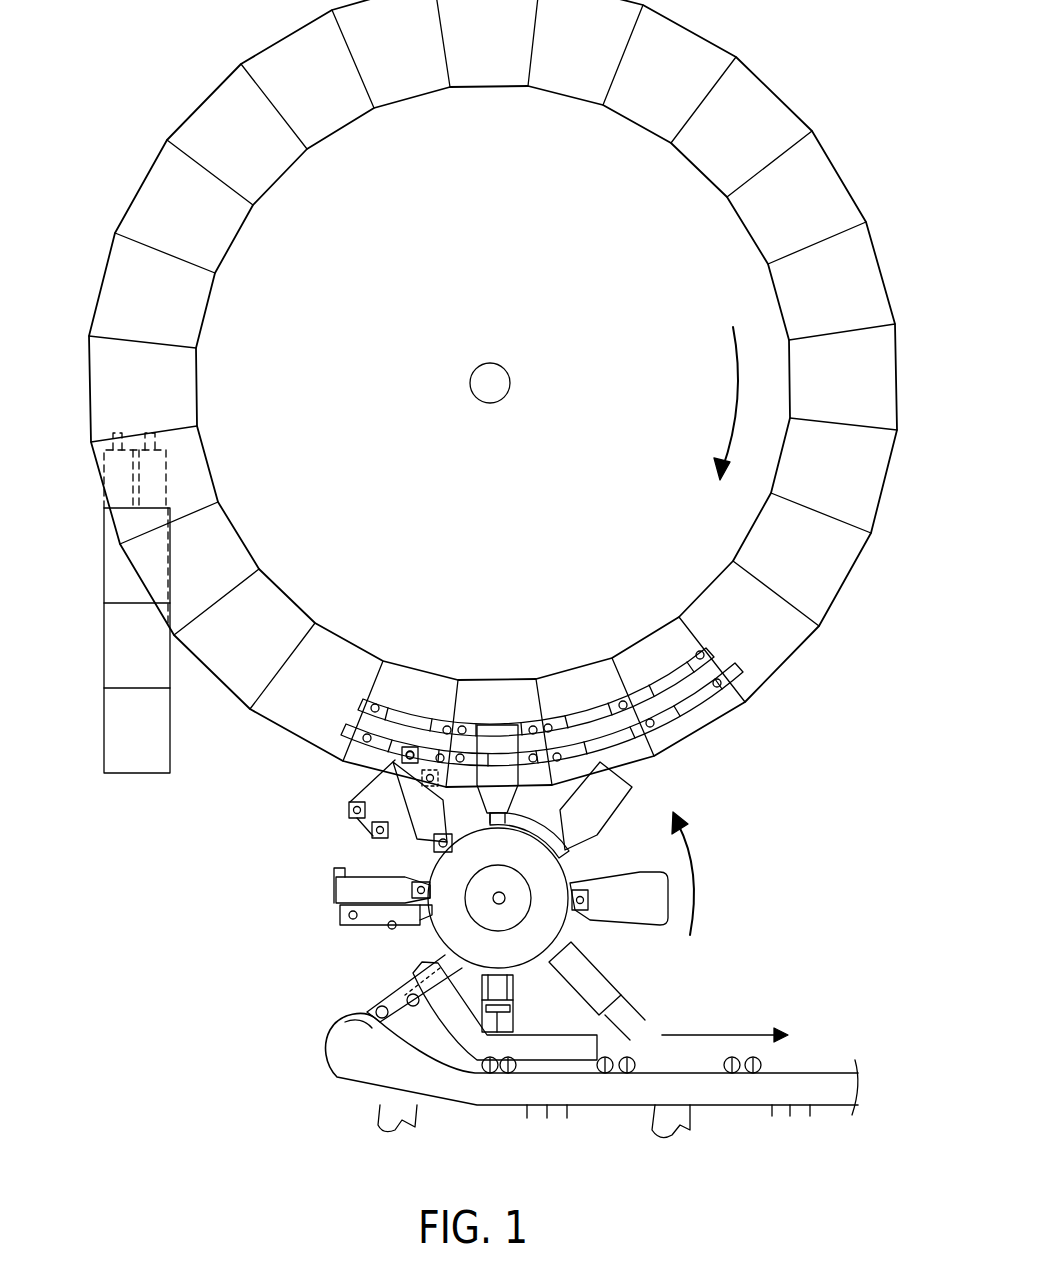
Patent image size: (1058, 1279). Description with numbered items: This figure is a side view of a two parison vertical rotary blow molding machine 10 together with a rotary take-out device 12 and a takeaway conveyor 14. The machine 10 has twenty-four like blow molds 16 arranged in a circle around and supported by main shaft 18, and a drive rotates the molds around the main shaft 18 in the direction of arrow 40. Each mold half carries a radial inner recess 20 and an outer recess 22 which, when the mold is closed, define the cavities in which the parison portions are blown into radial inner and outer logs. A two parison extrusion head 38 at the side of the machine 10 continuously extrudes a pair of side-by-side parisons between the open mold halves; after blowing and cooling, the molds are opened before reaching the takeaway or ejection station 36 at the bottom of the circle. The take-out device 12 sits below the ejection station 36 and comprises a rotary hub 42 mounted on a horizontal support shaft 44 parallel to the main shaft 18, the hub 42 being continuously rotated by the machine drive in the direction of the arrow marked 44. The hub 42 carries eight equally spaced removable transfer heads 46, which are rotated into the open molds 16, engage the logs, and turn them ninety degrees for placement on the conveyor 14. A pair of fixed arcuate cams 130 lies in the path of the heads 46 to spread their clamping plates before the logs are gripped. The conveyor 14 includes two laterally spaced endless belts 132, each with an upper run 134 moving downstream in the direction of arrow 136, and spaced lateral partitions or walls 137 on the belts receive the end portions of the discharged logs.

The blow molding machine 10 is at (106, 148).
The rotary take-out device 12 is at (258, 899).
The takeaway conveyor 14 is at (274, 1061).
The blow molds 16 is at (250, 200).
The main shaft 18 is at (498, 365).
The radial inner recess 20 is at (392, 697).
The outer recess 22 is at (352, 752).
The ejection station 36 is at (500, 674).
The two parison extrusion head 38 is at (103, 625).
The arrow indicating direction of mold rotation 40 is at (738, 393).
The rotary hub 42 is at (562, 871).
The horizontal support shaft 44 is at (494, 898).
The transfer heads 46 is at (420, 842).
The arcuate cams 130 is at (536, 826).
The endless belts 132 is at (343, 1077).
The upper run 134 is at (805, 1070).
The arrow indicating conveyor direction 136 is at (716, 1034).
The lateral partitions or walls 137 is at (534, 1137).